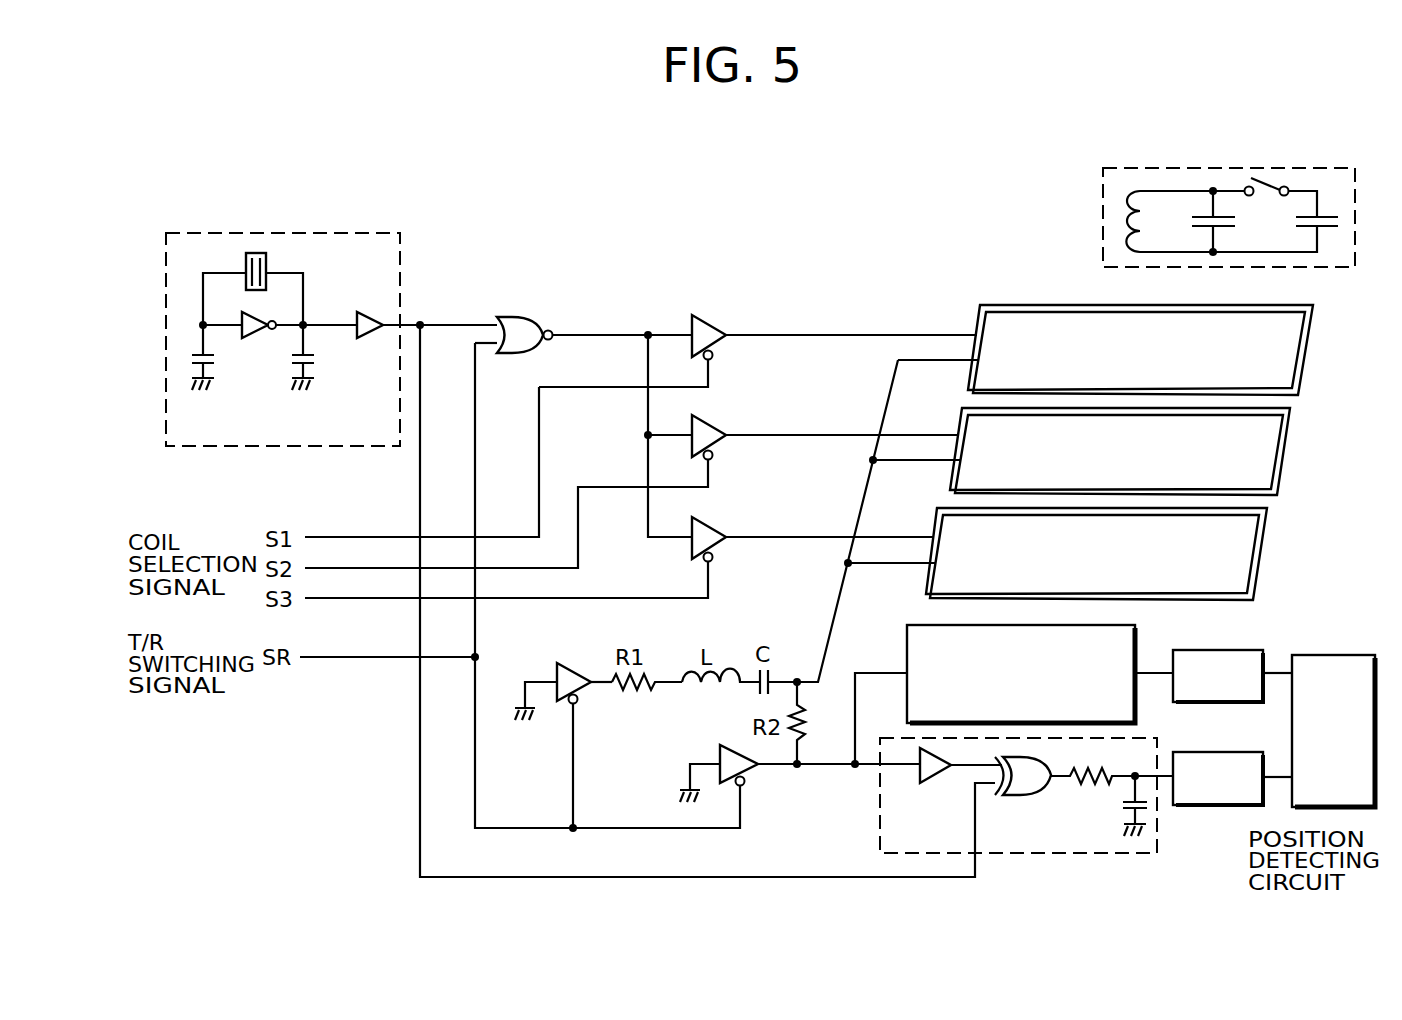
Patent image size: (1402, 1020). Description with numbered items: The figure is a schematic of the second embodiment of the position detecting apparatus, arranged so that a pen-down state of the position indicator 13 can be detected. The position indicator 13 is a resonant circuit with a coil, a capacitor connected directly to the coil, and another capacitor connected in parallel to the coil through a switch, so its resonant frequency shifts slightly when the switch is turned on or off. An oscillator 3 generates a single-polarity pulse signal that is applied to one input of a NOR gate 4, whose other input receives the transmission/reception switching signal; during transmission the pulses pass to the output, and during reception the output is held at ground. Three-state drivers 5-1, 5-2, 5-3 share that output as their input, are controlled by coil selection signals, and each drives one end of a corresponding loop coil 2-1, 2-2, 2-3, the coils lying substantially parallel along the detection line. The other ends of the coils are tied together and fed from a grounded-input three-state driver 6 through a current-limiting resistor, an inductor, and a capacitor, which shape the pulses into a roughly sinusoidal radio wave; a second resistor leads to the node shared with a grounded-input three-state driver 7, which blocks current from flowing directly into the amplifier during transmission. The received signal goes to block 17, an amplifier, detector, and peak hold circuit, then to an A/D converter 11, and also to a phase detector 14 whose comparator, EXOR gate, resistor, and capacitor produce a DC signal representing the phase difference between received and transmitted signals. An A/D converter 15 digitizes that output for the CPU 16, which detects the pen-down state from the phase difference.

The oscillator 3 is at (356, 234).
The NOR gate 4 is at (518, 317).
The three-state driver 5-1 is at (718, 324).
The three-state driver 5-2 is at (718, 434).
The three-state driver 5-3 is at (718, 534).
The loop coil 2-1 is at (1302, 366).
The loop coil 2-2 is at (1284, 455).
The loop coil 2-3 is at (1260, 566).
The position indicator 13 is at (1147, 168).
The three-state driver 6 is at (573, 664).
The three-state driver 7 is at (752, 772).
The amplifier, detector, and peak hold circuit 17 is at (906, 650).
The analog-to-digital converter 11 is at (1235, 652).
The analog-to-digital converter 15 is at (1229, 758).
The central processing unit 16 is at (1325, 655).
The phase detector 14 is at (1158, 828).